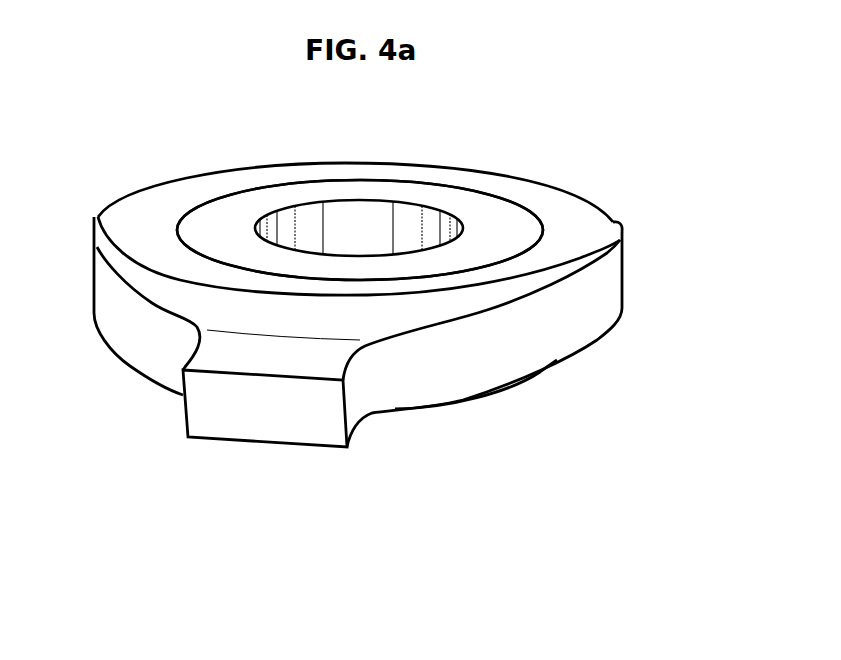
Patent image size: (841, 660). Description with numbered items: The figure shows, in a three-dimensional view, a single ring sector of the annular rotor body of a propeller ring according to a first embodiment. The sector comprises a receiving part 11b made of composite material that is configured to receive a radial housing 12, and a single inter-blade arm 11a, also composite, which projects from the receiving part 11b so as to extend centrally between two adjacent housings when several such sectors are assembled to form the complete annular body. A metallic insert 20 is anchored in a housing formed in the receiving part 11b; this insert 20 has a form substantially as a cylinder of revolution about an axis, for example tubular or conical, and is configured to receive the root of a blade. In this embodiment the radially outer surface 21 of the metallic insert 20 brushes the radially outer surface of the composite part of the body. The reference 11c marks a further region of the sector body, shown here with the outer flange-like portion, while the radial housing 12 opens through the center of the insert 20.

The arm 11a is at (267, 418).
The receiving part 11b is at (575, 318).
The flange / disc portion 11c is at (629, 141).
The radial housing 12 is at (374, 239).
The metallic insert 20 is at (487, 229).
The radially outer surface 21 is at (245, 210).